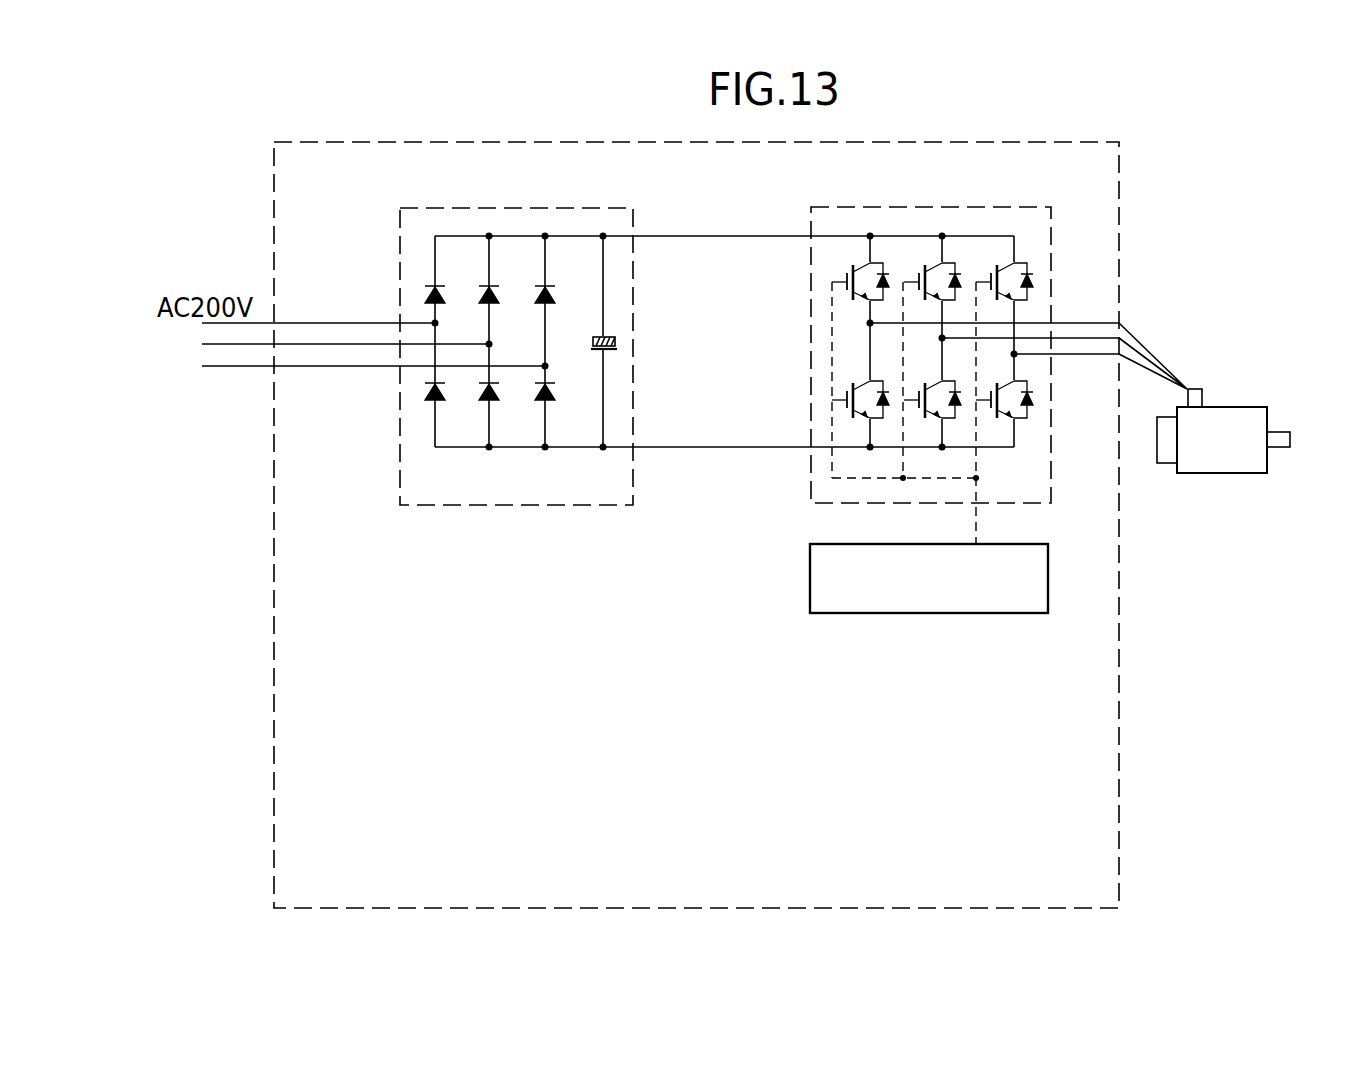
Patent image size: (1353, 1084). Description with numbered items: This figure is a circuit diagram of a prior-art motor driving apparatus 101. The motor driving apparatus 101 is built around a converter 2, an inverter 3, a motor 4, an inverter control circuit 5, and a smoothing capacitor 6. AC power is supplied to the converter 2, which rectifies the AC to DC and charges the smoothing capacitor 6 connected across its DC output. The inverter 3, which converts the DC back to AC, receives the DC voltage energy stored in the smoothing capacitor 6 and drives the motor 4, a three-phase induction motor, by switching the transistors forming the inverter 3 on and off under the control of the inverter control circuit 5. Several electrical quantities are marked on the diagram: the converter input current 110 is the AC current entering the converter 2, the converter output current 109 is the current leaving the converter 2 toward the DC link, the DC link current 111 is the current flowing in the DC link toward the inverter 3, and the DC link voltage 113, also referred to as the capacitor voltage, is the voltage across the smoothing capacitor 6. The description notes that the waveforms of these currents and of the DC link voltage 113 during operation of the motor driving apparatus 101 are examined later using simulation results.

The motor driving apparatus 101 is at (273, 180).
The converter 2 is at (495, 205).
The inverter 3 is at (905, 205).
The motor 4 is at (1240, 407).
The inverter control circuit 5 is at (1000, 615).
The smoothing capacitor 6 is at (599, 353).
The converter output current 109 is at (708, 214).
The converter input current 110 is at (368, 303).
The DC link current 111 is at (795, 214).
The DC link voltage 113 is at (647, 245).